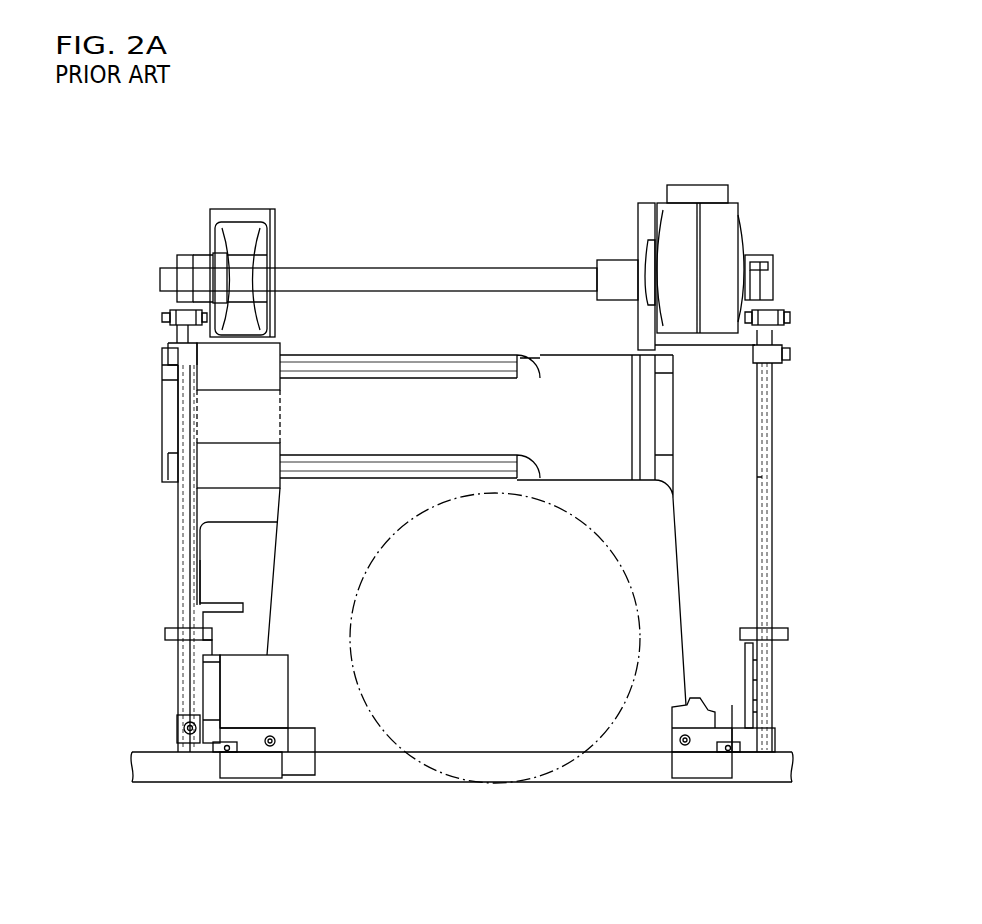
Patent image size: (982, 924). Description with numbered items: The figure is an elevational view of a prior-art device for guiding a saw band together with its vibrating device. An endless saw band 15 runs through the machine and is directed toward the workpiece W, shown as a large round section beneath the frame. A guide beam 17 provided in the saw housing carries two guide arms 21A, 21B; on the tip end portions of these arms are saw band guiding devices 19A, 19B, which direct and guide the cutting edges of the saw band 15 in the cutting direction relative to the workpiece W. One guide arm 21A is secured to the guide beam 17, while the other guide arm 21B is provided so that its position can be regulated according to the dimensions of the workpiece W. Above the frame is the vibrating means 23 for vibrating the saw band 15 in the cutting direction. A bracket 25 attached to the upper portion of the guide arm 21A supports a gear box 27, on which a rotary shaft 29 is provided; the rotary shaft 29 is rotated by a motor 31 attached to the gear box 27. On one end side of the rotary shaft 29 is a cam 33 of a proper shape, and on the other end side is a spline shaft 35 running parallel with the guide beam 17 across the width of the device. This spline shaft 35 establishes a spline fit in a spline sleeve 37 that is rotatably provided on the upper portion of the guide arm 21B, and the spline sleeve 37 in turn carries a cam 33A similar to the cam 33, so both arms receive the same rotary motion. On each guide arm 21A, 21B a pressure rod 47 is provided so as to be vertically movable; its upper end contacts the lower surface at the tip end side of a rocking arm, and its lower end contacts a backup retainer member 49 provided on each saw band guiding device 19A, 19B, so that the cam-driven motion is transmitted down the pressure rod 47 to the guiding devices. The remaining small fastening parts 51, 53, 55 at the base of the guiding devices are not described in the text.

The saw band 15 is at (382, 770).
The guide beam 17 is at (401, 431).
The saw band guiding device 19A is at (677, 684).
The saw band guiding device 19B is at (308, 712).
The guide arm 21A is at (690, 545).
The guide arm 21B is at (265, 502).
The vibrating means 23 is at (658, 154).
The bracket 25 is at (645, 215).
The gear box 27 is at (707, 215).
The rotary shaft 29 is at (615, 268).
The motor 31 is at (748, 240).
The cam 33 is at (775, 268).
The cam 33A is at (182, 258).
The spline shaft 35 is at (405, 268).
The spline sleeve 37 is at (197, 255).
The pressure rod 47 is at (775, 447).
The backup retainer member 49 is at (177, 742).
The block 51 is at (250, 770).
The nut 53 is at (222, 755).
The bolt 55 is at (272, 748).
The workpiece W is at (378, 545).